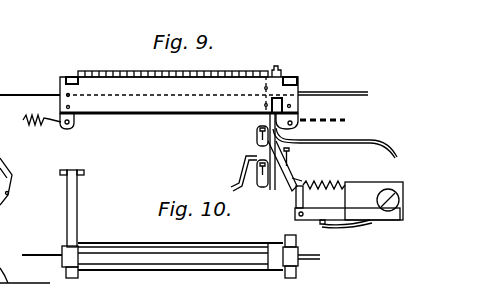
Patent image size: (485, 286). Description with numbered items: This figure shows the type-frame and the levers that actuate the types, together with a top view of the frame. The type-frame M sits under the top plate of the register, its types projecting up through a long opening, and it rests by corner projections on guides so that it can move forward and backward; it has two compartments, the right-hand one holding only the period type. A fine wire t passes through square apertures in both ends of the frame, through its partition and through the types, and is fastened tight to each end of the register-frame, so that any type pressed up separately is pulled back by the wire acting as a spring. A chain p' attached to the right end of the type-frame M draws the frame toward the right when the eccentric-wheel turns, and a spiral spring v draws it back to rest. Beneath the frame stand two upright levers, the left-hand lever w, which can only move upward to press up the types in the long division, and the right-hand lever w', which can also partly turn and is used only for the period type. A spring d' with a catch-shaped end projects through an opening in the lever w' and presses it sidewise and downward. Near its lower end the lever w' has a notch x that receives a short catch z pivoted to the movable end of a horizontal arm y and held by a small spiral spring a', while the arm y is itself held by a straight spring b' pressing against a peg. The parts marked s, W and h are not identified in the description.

In FIG. 9, the rail ticks s is at (173, 66).
In FIG. 9, the type-frame M is at (179, 97).
In FIG. 10, the type-frame M is at (179, 224).
In FIG. 9, the fine wire t is at (184, 86).
In FIG. 10, the fine wire t is at (171, 261).
In FIG. 9, the spiral spring v is at (42, 125).
In FIG. 9, the chain p' is at (331, 119).
In FIG. 9, the spring d' is at (335, 143).
In FIG. 9, the upright lever w is at (260, 151).
In FIG. 9, the hanger W is at (240, 173).
In FIG. 9, the upright lever w' is at (290, 166).
In FIG. 9, the notch x is at (297, 171).
In FIG. 9, the short catch z is at (293, 197).
In FIG. 9, the small spiral spring a' is at (325, 177).
In FIG. 9, the horizontal arm y is at (349, 201).
In FIG. 9, the straight spring b' is at (346, 230).
In FIG. 10, the frame h is at (25, 220).